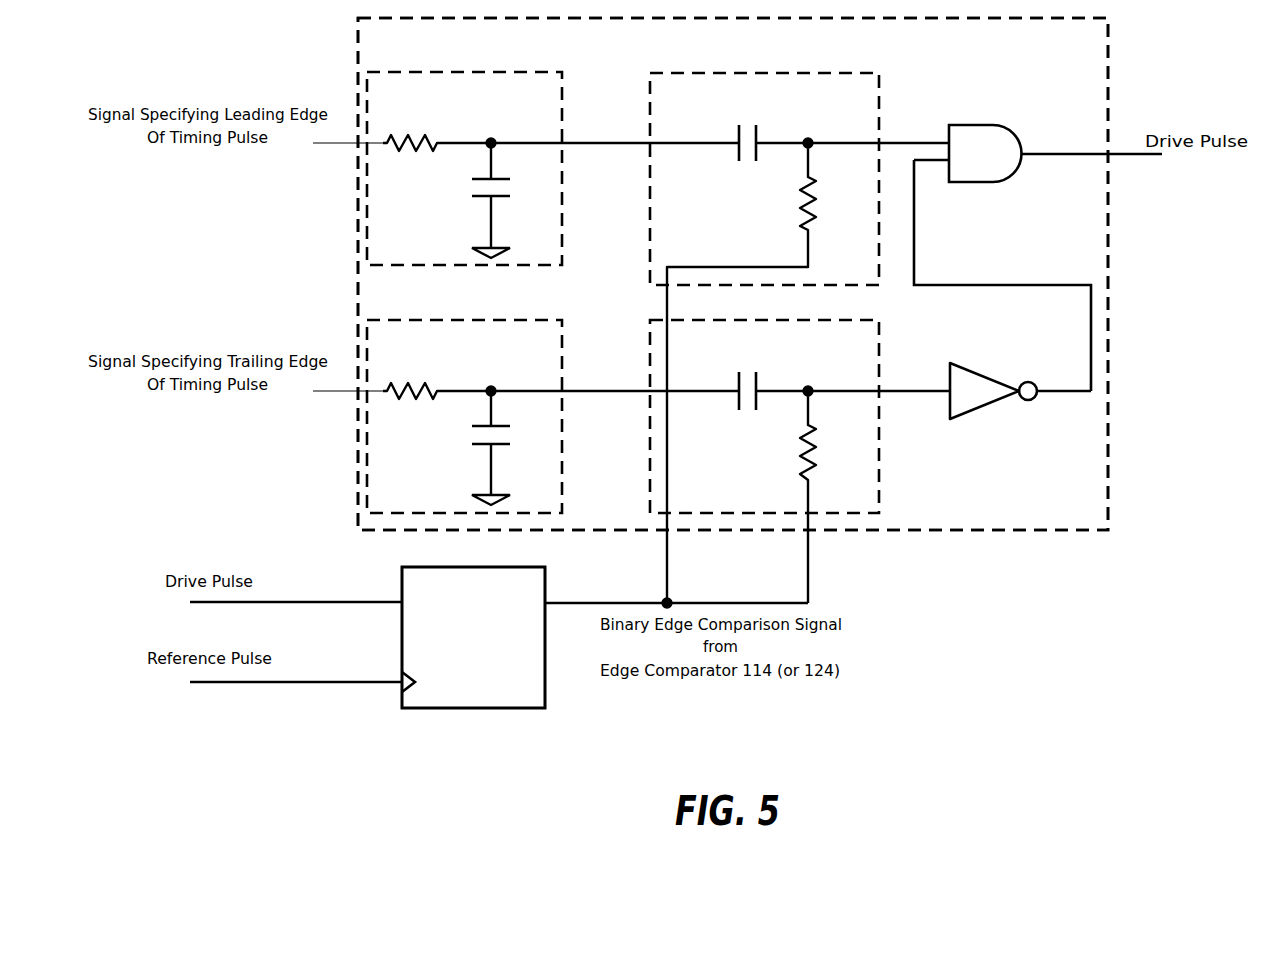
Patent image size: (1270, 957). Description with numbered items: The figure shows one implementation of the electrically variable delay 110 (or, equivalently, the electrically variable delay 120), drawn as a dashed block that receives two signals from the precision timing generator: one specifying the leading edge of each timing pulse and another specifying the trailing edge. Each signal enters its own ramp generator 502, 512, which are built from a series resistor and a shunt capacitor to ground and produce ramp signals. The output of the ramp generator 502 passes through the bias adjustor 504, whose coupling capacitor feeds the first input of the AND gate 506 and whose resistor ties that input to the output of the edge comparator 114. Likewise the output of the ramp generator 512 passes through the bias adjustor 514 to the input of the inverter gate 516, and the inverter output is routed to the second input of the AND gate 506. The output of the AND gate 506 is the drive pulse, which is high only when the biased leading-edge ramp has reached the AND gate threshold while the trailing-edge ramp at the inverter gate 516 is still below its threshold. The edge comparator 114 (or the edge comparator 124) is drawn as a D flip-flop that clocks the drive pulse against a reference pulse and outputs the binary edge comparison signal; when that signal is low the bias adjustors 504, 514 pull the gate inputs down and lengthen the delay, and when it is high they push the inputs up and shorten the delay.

The electrically variable delay 110 is at (733, 274).
The electrically variable delay 120 is at (733, 274).
The ramp generator 502 is at (481, 168).
The bias adjustor 504 is at (799, 338).
The AND gate 506 is at (1038, 258).
The ramp generator 512 is at (481, 416).
The bias adjustor 514 is at (800, 461).
The inverter gate 516 is at (1020, 391).
The edge comparator 114 is at (499, 664).
The edge comparator 124 is at (473, 664).